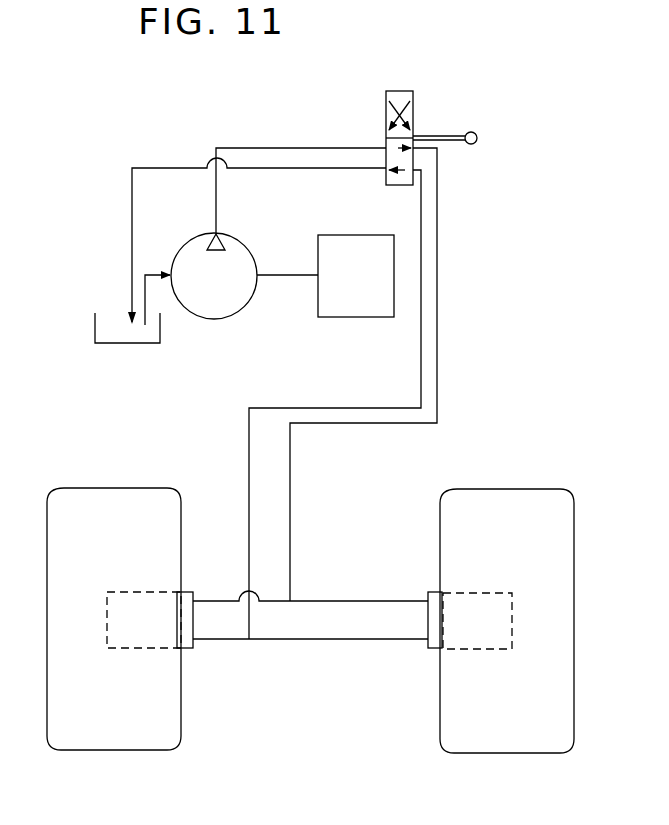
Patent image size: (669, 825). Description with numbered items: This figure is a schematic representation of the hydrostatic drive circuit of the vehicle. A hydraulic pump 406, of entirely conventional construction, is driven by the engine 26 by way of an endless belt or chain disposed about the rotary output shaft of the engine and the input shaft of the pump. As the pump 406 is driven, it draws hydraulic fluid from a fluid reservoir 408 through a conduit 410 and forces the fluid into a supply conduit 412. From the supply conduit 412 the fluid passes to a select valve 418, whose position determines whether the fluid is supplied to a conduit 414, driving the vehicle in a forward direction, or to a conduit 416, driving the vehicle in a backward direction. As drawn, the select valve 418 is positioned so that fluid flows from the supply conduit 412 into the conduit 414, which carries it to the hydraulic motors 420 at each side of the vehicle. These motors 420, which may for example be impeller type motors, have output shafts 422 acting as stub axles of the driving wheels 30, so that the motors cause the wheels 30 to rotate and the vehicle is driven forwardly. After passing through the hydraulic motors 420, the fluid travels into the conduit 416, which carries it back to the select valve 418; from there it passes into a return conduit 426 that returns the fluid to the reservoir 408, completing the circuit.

The supply conduit 412 is at (261, 147).
The return conduit 426 is at (150, 166).
The select valve 418 is at (477, 96).
The conduit 414 is at (438, 313).
The conduit 416 is at (249, 450).
The hydraulic pump 406 is at (272, 330).
The conduit 410 is at (152, 272).
The fluid reservoir 408 is at (95, 330).
The engine 26 is at (350, 317).
The driving wheels 30 is at (68, 474).
The hydraulic motors 420 is at (212, 582).
The output shafts 422 is at (105, 612).